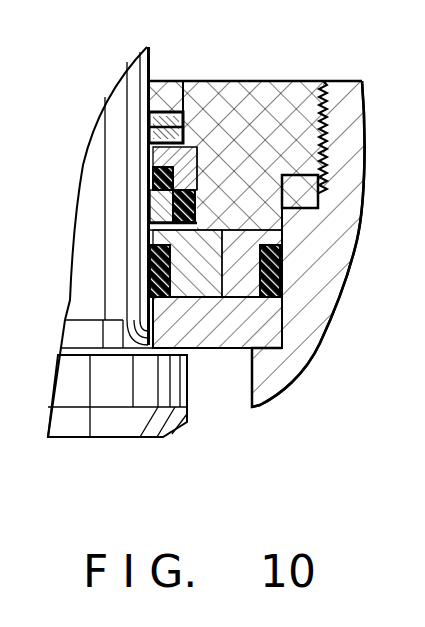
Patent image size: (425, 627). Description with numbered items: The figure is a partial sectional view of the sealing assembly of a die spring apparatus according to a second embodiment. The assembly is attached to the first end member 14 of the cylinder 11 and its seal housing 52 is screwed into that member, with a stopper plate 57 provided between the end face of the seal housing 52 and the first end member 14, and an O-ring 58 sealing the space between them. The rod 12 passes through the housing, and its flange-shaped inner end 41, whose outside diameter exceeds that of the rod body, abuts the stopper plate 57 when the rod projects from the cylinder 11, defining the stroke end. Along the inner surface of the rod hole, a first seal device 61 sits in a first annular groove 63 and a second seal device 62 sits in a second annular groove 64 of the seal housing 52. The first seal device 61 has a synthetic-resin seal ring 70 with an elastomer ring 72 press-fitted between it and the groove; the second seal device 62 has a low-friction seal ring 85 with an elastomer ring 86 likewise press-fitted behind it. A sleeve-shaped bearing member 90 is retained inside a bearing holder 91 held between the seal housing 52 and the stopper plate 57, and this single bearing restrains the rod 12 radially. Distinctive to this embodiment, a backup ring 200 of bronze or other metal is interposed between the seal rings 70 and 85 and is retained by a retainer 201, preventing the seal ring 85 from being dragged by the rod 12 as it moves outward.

The cylinder 11 is at (298, 386).
The rod 12 is at (110, 106).
The first end member 14 is at (310, 330).
The inner end 41 is at (103, 427).
The seal housing 52 is at (302, 81).
The stopper plate 57 is at (214, 335).
The O-ring 58 is at (283, 283).
The first seal device 61 is at (137, 103).
The second seal device 62 is at (150, 212).
The first annular groove 63 is at (188, 132).
The second annular groove 64 is at (184, 192).
The seal ring 70 is at (147, 142).
The elastomer ring 72 is at (160, 80).
The seal ring 85 is at (153, 185).
The elastomer ring 86 is at (283, 214).
The bearing member 90 is at (150, 263).
The bearing holder 91 is at (272, 247).
The backup ring 200 is at (150, 160).
The retainer 201 is at (297, 92).